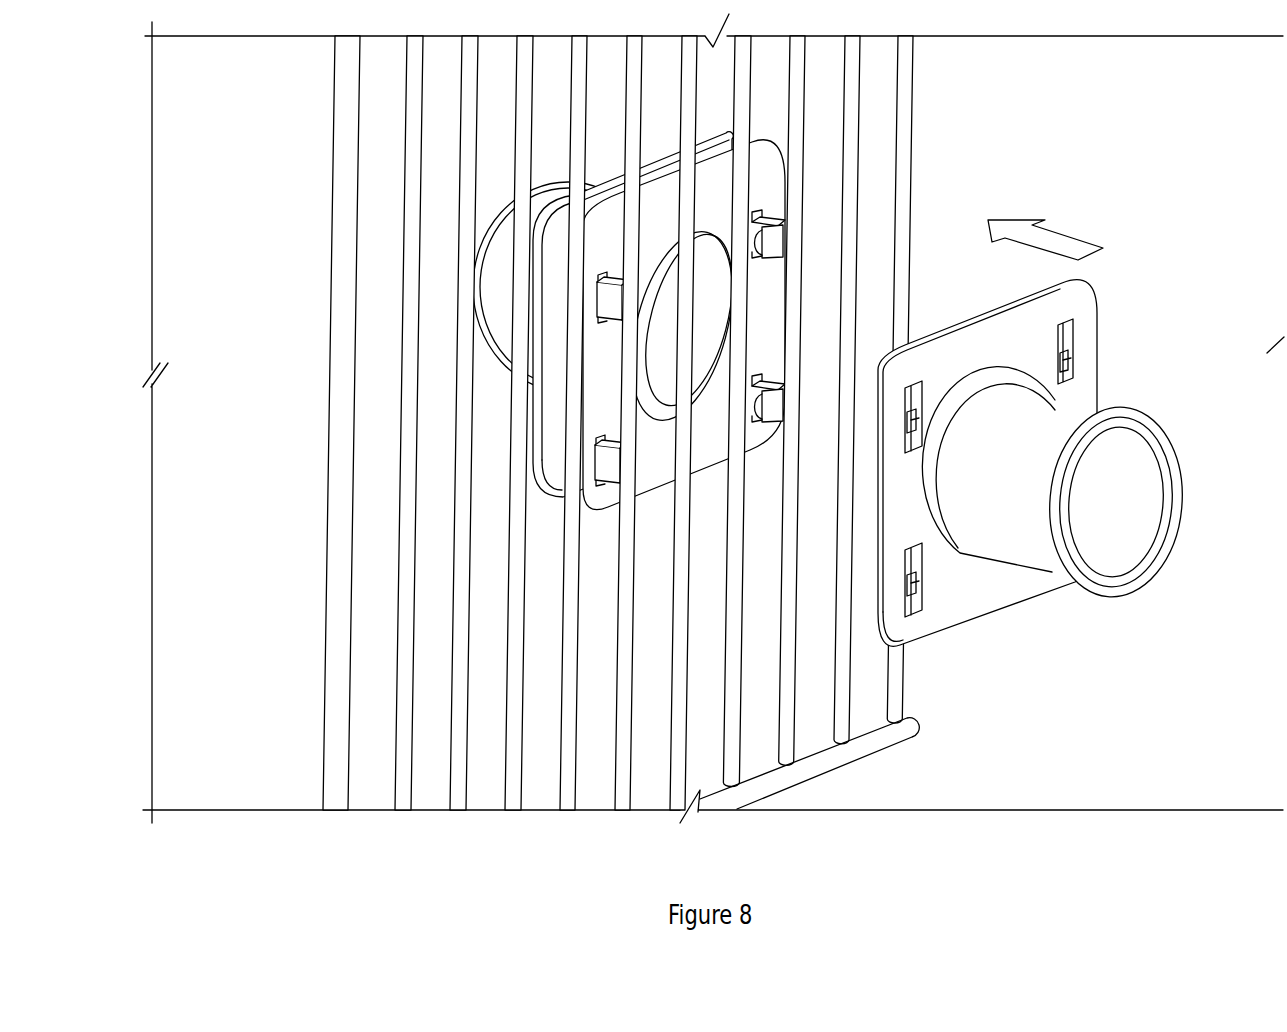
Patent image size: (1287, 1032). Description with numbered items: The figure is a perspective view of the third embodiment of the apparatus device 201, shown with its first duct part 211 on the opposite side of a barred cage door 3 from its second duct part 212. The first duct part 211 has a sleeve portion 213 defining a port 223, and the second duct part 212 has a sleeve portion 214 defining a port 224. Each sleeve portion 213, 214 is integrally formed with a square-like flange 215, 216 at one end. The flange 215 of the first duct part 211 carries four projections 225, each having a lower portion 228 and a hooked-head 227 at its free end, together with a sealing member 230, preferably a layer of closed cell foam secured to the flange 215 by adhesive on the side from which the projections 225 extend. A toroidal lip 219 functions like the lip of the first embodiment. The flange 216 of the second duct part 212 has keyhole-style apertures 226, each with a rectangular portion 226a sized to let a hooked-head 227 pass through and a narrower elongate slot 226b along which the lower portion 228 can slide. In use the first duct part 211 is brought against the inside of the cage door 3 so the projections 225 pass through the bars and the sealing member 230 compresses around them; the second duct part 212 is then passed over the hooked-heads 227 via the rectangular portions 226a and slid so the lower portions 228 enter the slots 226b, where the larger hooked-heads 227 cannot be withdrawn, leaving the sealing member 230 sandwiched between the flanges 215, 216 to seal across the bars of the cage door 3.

The cage door 3 is at (912, 120).
The apparatus device 201 is at (1056, 444).
The second duct part 212 is at (1056, 444).
The first duct part 211 is at (519, 337).
The sleeve portion 213 is at (519, 337).
The sleeve portion 214 is at (1056, 505).
The flange 215 is at (710, 337).
The flange 216 is at (1090, 363).
The toroidal lip 219 is at (547, 190).
The port 223 is at (568, 247).
The port 224 is at (1097, 547).
The projection 225 is at (606, 466).
The keyhole-style aperture 226 is at (1062, 507).
The rectangular portion 226a is at (1067, 333).
The elongate slot 226b is at (1080, 381).
The hooked-head 227 is at (766, 254).
The lower portion 228 is at (770, 384).
The sealing member 230 is at (548, 470).